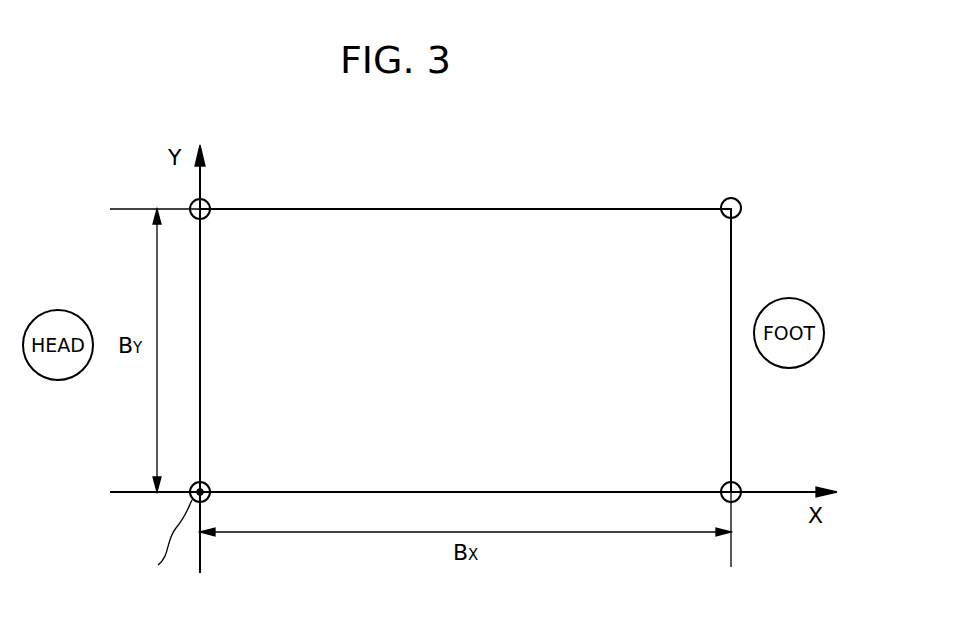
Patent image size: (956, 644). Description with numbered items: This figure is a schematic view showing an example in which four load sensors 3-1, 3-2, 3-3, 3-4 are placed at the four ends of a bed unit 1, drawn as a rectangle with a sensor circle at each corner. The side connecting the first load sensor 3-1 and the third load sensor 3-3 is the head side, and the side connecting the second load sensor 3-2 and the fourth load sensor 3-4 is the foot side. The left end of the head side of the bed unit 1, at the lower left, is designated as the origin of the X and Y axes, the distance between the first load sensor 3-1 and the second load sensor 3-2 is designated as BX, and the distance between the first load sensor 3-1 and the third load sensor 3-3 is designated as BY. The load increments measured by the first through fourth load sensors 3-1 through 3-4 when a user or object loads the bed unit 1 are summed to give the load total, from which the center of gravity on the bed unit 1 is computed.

The bed unit 1 is at (477, 218).
The first load sensor 3-1 is at (189, 495).
The second load sensor 3-2 is at (742, 499).
The third load sensor 3-3 is at (192, 204).
The fourth load sensor 3-4 is at (744, 200).